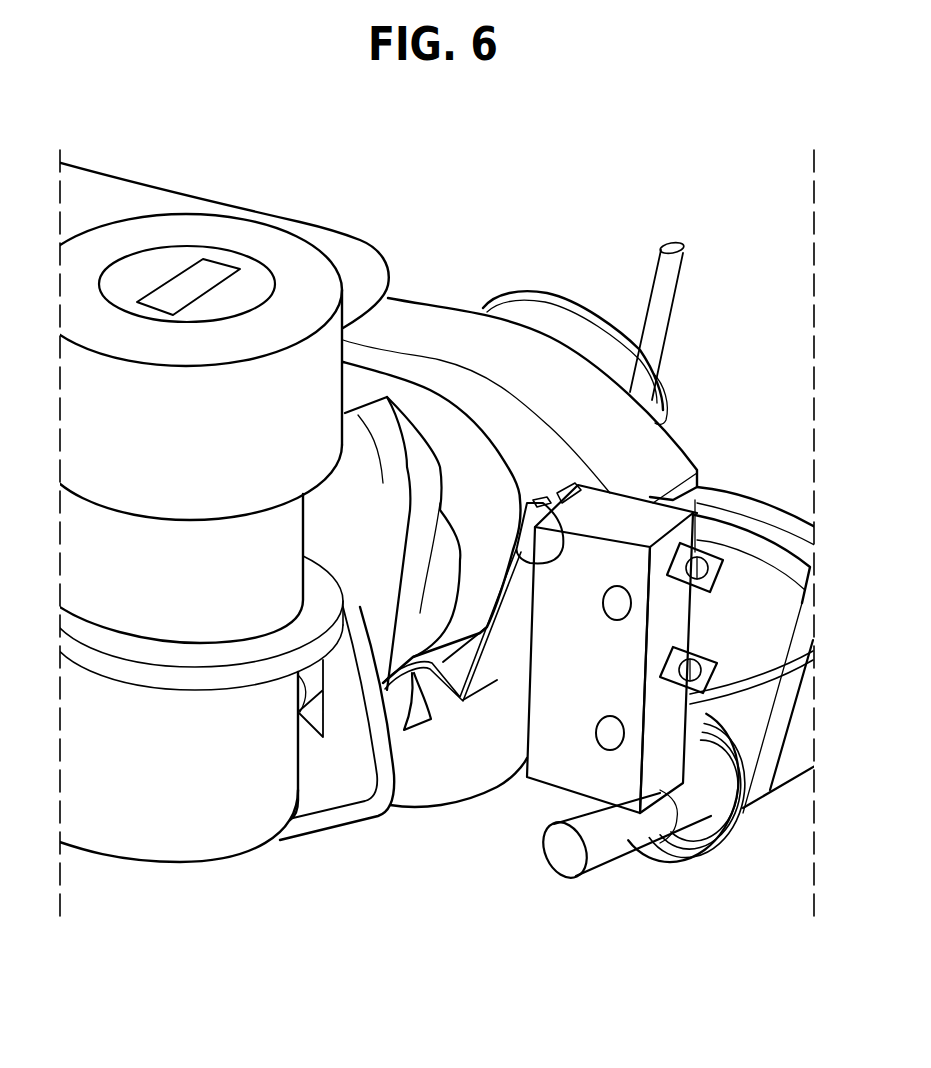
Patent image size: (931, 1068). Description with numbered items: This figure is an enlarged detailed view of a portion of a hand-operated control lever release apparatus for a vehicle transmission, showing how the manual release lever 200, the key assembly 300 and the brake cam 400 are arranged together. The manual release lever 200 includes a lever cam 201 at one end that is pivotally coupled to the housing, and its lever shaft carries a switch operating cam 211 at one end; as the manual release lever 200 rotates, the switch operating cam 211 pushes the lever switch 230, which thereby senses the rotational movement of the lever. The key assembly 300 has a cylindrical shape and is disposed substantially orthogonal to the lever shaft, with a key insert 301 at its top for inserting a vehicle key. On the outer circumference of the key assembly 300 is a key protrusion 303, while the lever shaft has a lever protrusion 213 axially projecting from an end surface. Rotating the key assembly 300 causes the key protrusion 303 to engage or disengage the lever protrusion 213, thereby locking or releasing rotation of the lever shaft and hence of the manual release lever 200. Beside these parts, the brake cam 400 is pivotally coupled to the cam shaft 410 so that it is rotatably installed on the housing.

The manual release lever 200 is at (320, 212).
The lever cam 201 is at (558, 383).
The switch operating cam 211 is at (383, 475).
The lever protrusion 213 is at (311, 712).
The lever switch 230 is at (520, 682).
The key assembly 300 is at (203, 884).
The key insert 301 is at (203, 280).
The key protrusion 303 is at (347, 812).
The brake cam 400 is at (762, 482).
The cam shaft 410 is at (567, 860).